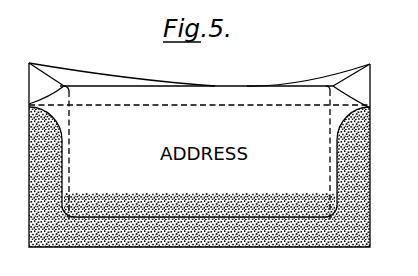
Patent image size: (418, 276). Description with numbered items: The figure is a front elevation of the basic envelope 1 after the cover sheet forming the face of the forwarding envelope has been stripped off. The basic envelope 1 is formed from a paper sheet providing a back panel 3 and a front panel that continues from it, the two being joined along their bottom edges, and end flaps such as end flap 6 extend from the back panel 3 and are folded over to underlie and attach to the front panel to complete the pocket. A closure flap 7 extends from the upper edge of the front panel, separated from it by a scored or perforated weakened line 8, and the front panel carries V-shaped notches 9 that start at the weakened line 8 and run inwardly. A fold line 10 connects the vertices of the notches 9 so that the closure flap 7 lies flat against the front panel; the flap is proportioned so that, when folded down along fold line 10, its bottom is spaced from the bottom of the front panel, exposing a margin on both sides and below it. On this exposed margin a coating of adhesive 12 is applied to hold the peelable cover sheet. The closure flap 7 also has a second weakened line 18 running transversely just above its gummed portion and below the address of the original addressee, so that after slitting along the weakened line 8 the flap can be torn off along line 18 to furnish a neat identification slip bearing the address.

The basic envelope 1 is at (28, 63).
The back panel 3 is at (62, 80).
The end flap 6 is at (199, 78).
The closure flap 7 is at (57, 173).
The weakened line 8 is at (192, 103).
The V-shaped notch 9 is at (29, 105).
The fold line 10 is at (307, 87).
The adhesive coating 12 is at (30, 227).
The second weakened line 18 is at (113, 197).